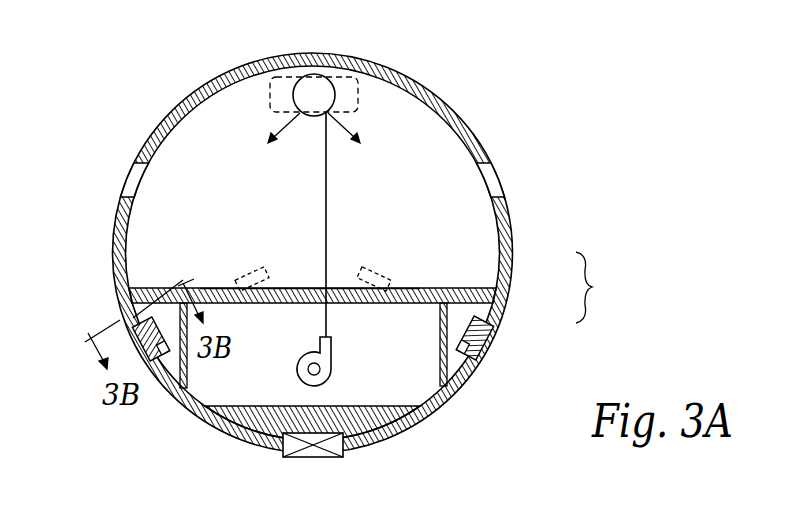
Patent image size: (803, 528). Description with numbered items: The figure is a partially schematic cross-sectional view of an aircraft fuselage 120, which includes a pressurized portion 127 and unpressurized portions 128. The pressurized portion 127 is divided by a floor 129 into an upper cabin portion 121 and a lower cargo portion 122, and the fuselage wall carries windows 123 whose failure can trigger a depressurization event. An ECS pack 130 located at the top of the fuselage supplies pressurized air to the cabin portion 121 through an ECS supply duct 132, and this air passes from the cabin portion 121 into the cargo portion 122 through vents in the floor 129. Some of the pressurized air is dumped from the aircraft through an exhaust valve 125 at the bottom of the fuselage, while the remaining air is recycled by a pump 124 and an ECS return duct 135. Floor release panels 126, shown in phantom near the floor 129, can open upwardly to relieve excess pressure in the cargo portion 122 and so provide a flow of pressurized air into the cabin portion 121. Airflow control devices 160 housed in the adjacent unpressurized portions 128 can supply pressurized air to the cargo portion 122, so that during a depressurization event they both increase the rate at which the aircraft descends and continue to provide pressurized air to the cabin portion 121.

The fuselage 120 is at (443, 98).
The cabin portion 121 is at (462, 260).
The cargo portion 122 is at (458, 318).
The windows 123 is at (496, 180).
The pump 124 is at (329, 378).
The exhaust valve 125 is at (312, 458).
The floor release panels 126 is at (248, 270).
The pressurized portion 127 is at (592, 288).
The unpressurized portions 128 is at (135, 318).
The floor 129 is at (287, 289).
The ECS pack 130 is at (268, 92).
The ECS supply duct 132 is at (336, 88).
The ECS return duct 135 is at (331, 207).
The airflow control devices 160 is at (179, 388).